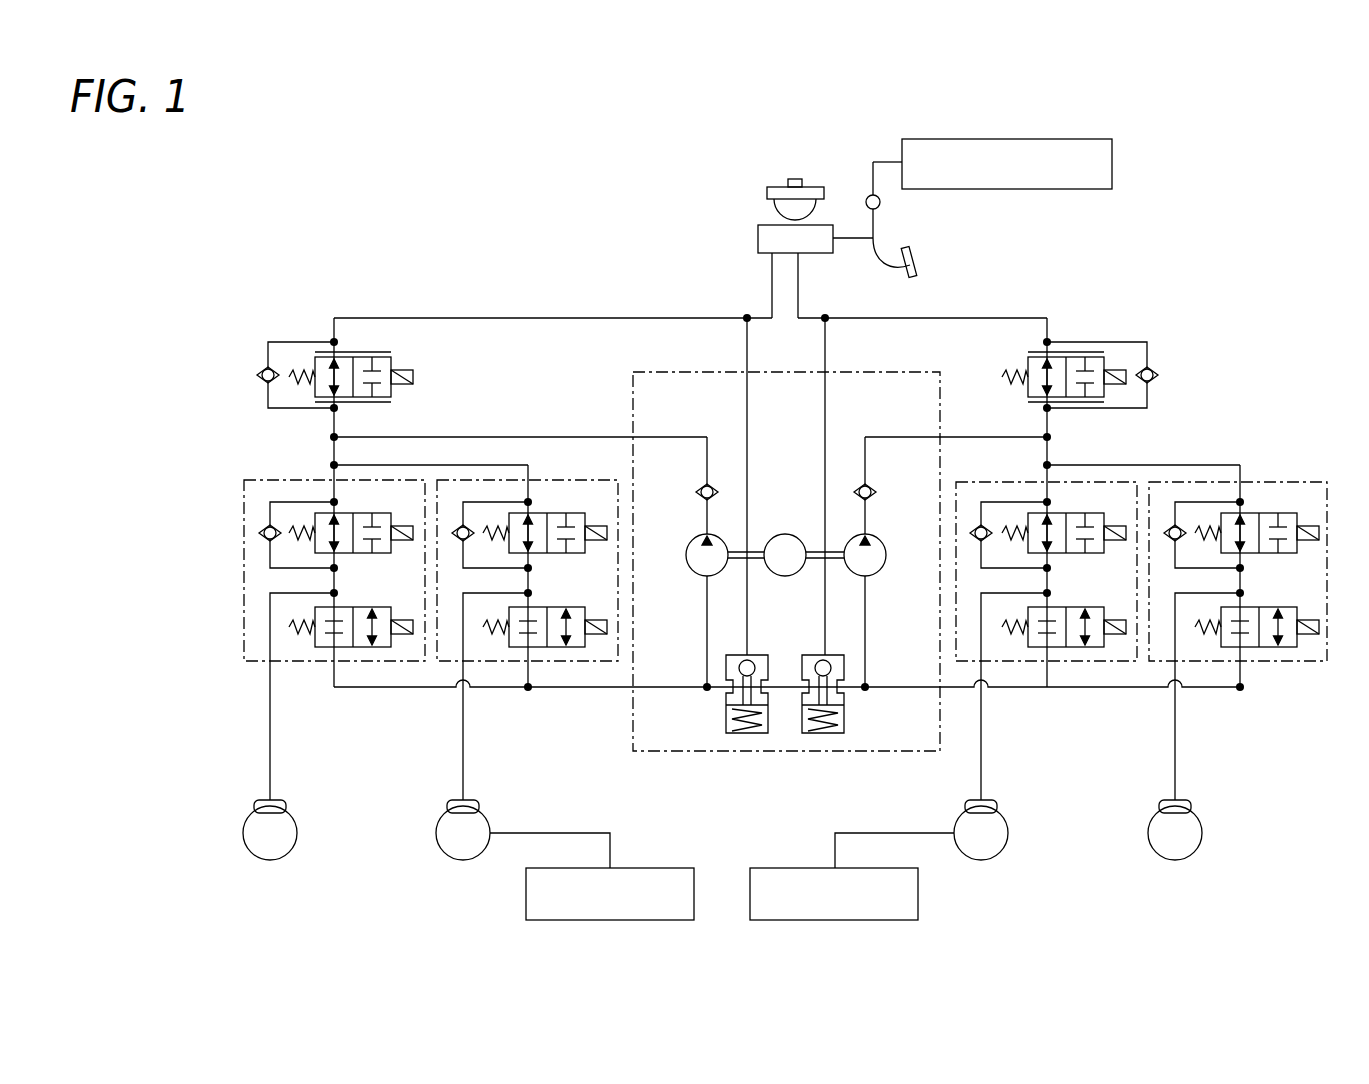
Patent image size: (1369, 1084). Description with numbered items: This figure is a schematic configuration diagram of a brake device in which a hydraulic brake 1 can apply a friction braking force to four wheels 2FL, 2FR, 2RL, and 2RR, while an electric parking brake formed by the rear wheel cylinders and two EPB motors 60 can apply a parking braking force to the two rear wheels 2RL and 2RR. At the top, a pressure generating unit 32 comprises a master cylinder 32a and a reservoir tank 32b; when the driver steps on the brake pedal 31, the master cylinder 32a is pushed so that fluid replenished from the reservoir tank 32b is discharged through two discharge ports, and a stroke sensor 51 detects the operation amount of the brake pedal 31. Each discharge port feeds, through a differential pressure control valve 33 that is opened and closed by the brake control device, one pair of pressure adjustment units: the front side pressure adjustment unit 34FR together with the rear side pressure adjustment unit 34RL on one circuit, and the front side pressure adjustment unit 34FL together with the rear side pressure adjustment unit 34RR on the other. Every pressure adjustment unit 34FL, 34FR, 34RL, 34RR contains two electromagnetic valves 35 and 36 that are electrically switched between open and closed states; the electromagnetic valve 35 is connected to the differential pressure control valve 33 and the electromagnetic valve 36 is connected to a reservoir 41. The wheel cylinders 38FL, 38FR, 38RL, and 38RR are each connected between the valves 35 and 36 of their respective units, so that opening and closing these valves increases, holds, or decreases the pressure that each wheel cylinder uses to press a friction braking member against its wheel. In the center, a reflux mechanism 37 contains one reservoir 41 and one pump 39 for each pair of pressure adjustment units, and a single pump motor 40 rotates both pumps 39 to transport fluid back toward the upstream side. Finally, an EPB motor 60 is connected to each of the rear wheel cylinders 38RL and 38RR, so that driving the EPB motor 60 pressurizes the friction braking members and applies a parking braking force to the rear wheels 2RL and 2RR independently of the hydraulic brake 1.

The hydraulic brake 1 is at (1158, 172).
The front right wheel 2FR is at (268, 846).
The rear left wheel 2RL is at (461, 846).
The rear right wheel 2RR is at (979, 846).
The front left wheel 2FL is at (1173, 846).
The brake pedal 31 is at (921, 264).
The pressure generating unit 32 is at (738, 185).
The master cylinder 32a is at (758, 238).
The reservoir tank 32b is at (778, 187).
The differential pressure control valve 33 is at (375, 352).
The front right pressure adjustment unit 34FR is at (262, 480).
The rear left pressure adjustment unit 34RL is at (540, 480).
The rear right pressure adjustment unit 34RR is at (966, 482).
The front left pressure adjustment unit 34FL is at (1258, 482).
The electromagnetic valve 35 is at (347, 513).
The electromagnetic valve 36 is at (347, 607).
The reflux mechanism 37 is at (828, 752).
The front right wheel cylinder 38FR is at (284, 803).
The rear left wheel cylinder 38RL is at (478, 803).
The rear right wheel cylinder 38RR is at (995, 803).
The front left wheel cylinder 38FL is at (1188, 803).
The pump 39 is at (690, 575).
The pump motor 40 is at (786, 577).
The reservoir 41 is at (726, 720).
The stroke sensor 51 is at (996, 139).
The EPB motor 60 is at (640, 868).